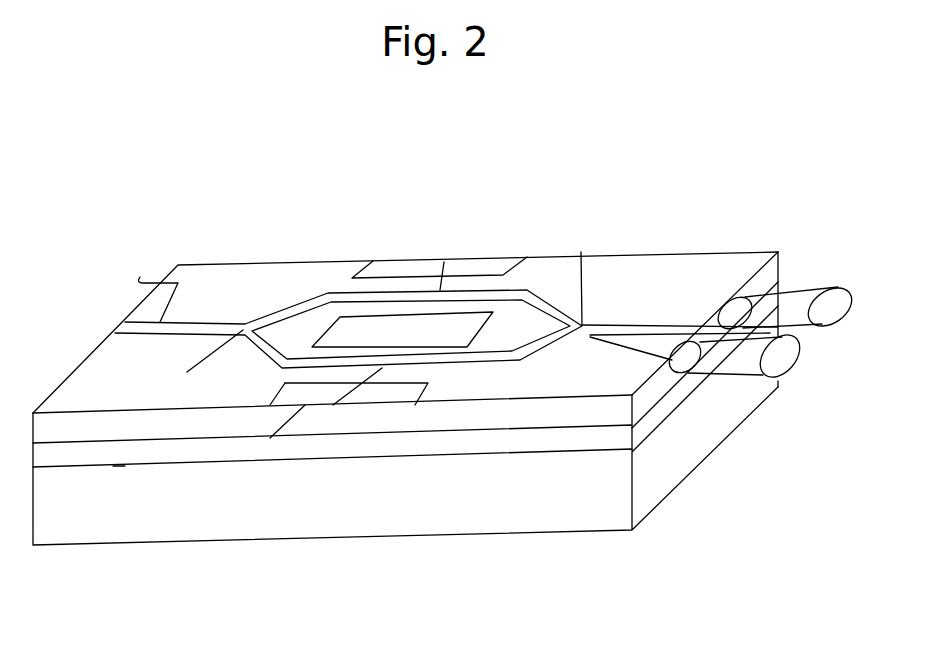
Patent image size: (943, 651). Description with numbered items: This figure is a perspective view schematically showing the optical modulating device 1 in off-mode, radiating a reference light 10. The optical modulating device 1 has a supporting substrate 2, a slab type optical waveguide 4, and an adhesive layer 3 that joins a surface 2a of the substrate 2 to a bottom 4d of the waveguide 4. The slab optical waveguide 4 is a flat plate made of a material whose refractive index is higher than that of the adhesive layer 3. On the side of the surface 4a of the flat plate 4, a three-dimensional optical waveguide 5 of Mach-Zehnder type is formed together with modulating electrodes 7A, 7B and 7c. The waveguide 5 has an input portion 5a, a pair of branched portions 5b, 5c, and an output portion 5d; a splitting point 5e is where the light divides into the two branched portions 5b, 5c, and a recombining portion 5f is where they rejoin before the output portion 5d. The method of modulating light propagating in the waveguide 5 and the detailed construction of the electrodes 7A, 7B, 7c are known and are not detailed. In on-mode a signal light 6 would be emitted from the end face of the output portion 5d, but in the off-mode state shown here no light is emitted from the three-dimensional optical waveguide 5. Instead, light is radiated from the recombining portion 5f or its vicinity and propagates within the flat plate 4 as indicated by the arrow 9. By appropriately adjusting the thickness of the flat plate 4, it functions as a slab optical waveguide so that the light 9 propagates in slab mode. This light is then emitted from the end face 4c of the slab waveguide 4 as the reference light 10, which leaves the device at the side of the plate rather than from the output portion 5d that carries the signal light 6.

The optical modulating device 1 is at (762, 208).
The supporting substrate 2 is at (467, 520).
The surface of the substrate 2a is at (113, 466).
The adhesive layer 3 is at (230, 450).
The slab type optical waveguide 4 is at (256, 252).
The surface of the flat plate 4a is at (612, 277).
The end face of the slab waveguide 4c is at (660, 380).
The bottom of the waveguide 4d is at (423, 433).
The three-dimensional optical waveguide 5 is at (302, 277).
The input portion 5a is at (141, 276).
The branched portion 5b is at (444, 263).
The branched portion 5c is at (333, 405).
The output portion 5d is at (696, 325).
The splitting point 5e is at (187, 372).
The recombining portion 5f is at (580, 252).
The signal light 6 is at (797, 310).
The modulating electrode 7A is at (383, 275).
The modulating electrode 7B is at (457, 322).
The modulating electrode 7c is at (270, 438).
The light propagated in the flat plate 9 is at (583, 386).
The reference light 10 is at (787, 362).